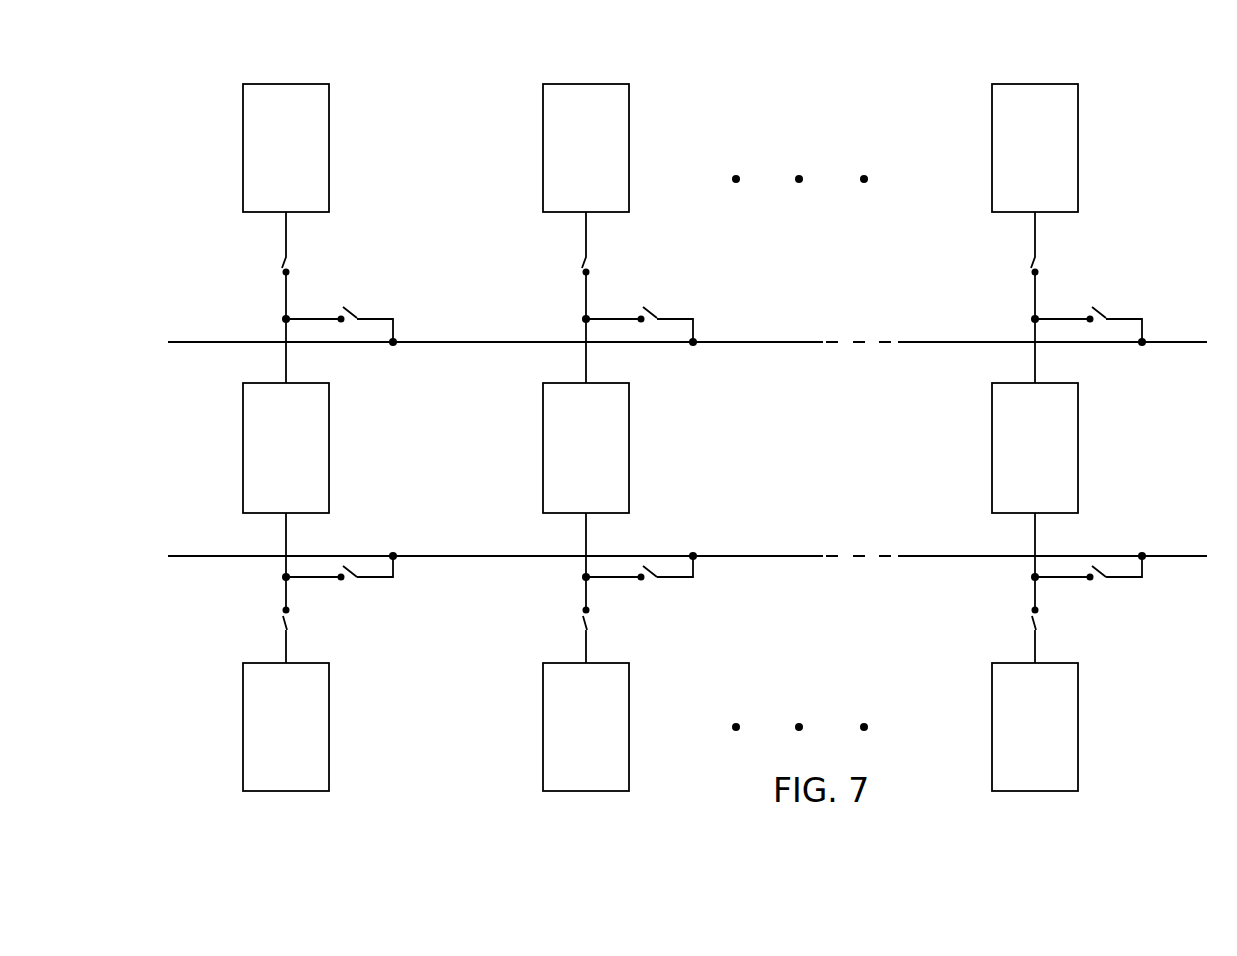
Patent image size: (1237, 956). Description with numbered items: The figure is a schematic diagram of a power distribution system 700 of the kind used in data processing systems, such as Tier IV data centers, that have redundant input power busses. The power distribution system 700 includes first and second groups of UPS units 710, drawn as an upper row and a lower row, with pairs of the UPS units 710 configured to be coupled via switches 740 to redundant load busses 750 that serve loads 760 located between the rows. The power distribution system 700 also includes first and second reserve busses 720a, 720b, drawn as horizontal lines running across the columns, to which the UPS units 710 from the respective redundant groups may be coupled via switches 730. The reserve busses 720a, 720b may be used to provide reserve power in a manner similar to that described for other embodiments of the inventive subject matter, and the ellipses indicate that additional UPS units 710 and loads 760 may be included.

The power distribution system 700 is at (1157, 141).
The UPS units 710 is at (243, 147).
The first reserve bus 720a is at (512, 341).
The second reserve bus 720b is at (500, 555).
The switches 730 is at (371, 299).
The switches 740 is at (271, 259).
The redundant load busses 750 is at (286, 352).
The loads 760 is at (243, 448).